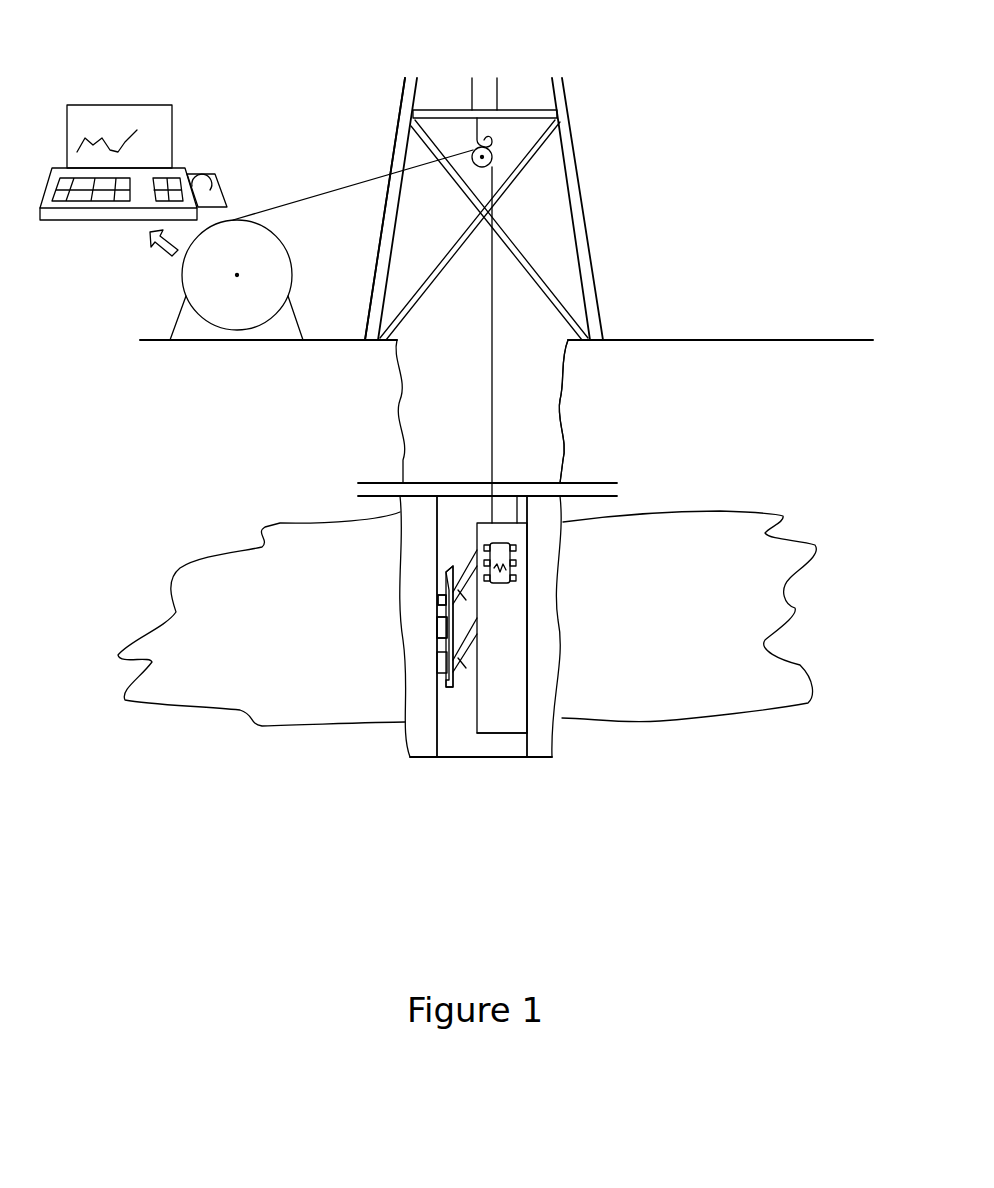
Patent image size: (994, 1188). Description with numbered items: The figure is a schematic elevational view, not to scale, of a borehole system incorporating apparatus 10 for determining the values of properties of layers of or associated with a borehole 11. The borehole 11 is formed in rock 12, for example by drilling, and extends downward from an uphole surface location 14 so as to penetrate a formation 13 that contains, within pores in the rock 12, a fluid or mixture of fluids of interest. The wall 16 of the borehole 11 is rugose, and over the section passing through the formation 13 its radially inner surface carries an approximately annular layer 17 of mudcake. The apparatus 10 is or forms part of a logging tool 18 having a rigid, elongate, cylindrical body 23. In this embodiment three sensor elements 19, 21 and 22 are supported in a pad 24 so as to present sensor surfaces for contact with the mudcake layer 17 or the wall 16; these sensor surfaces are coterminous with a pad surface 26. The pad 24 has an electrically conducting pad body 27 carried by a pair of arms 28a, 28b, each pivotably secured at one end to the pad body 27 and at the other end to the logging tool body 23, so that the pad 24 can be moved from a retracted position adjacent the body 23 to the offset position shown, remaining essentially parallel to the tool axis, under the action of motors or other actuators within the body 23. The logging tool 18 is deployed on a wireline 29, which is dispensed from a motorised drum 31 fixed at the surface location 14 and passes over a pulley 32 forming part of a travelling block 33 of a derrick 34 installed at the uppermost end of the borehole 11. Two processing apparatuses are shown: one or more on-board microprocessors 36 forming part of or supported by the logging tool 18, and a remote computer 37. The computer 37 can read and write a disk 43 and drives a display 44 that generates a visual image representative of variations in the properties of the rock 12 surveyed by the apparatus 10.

The apparatus 10 is at (393, 630).
The borehole 11 is at (427, 408).
The rock 12 is at (181, 526).
The formation 13 is at (291, 590).
The surface location 14 is at (630, 297).
The wall 16 is at (562, 406).
The layer of mudcake 17 is at (420, 728).
The logging tool 18 is at (513, 697).
The sensor element 19 is at (438, 600).
The sensor element 21 is at (437, 628).
The sensor element 22 is at (437, 662).
The logging tool body 23 is at (484, 720).
The pad 24 is at (447, 568).
The pad surface 26 is at (437, 607).
The pad body 27 is at (437, 650).
The arm 28a is at (470, 600).
The arm 28b is at (470, 662).
The wireline 29 is at (343, 187).
The drum 31 is at (217, 310).
The pulley 32 is at (474, 164).
The travelling block 33 is at (480, 128).
The derrick 34 is at (383, 251).
The on-board microprocessor 36 is at (497, 552).
The remote computer 37 is at (140, 161).
The disk 43 is at (203, 174).
The display 44 is at (138, 119).